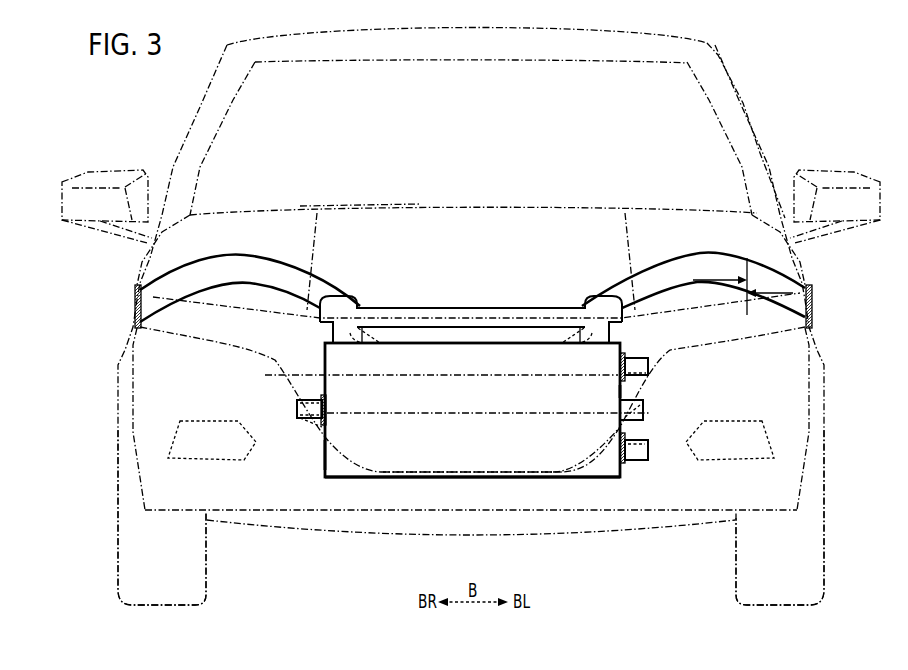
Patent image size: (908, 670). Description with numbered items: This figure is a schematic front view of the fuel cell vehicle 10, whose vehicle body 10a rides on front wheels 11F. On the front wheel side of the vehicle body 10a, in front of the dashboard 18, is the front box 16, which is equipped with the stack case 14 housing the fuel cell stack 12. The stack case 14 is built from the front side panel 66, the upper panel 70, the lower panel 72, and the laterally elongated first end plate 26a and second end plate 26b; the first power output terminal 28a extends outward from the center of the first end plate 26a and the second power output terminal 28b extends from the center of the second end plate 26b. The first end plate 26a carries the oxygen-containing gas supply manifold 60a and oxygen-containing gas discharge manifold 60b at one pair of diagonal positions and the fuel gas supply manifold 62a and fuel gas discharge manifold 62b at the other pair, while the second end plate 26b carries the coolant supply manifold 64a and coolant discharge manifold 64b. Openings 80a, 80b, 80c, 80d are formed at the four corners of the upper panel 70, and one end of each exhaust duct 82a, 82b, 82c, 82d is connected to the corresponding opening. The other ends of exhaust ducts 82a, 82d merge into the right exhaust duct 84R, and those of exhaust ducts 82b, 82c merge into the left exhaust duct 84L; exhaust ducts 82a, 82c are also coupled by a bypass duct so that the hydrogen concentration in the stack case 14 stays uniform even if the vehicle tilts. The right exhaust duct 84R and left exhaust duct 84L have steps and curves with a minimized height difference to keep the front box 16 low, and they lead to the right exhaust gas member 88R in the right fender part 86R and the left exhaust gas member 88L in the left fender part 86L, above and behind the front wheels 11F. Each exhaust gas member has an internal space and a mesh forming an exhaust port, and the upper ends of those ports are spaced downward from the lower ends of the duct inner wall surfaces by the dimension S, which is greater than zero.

The fuel cell vehicle 10 is at (119, 98).
The vehicle body 10a is at (741, 103).
The front wheels 11F is at (133, 545).
The fuel cell stack 12 is at (554, 460).
The stack case 14 is at (520, 477).
The front box 16 is at (432, 237).
The dashboard 18 is at (478, 207).
The first end plate 26a is at (620, 392).
The second end plate 26b is at (324, 457).
The first power output terminal 28a is at (645, 416).
The second power output terminal 28b is at (298, 413).
The oxygen-containing gas supply manifold 60a is at (648, 365).
The oxygen-containing gas discharge manifold 60b is at (667, 504).
The fuel gas supply manifold 62a is at (688, 368).
The fuel gas discharge manifold 62b is at (640, 458).
The coolant supply manifold 64a is at (297, 403).
The coolant discharge manifold 64b is at (260, 409).
The front side panel 66 is at (430, 462).
The upper panel 70 is at (482, 342).
The lower panel 72 is at (392, 479).
The opening 80a is at (402, 353).
The opening 80b is at (578, 337).
The opening 80c is at (542, 353).
The opening 80d is at (365, 337).
The exhaust duct 82a is at (369, 304).
The exhaust duct 82b is at (593, 307).
The exhaust duct 82c is at (574, 304).
The exhaust duct 82d is at (350, 308).
The right exhaust duct 84R is at (242, 267).
The left exhaust duct 84L is at (703, 263).
The right fender part 86R is at (137, 334).
The left fender part 86L is at (810, 333).
The right exhaust gas member 88R is at (135, 308).
The left exhaust gas member 88L is at (812, 305).
The dimension S is at (743, 286).